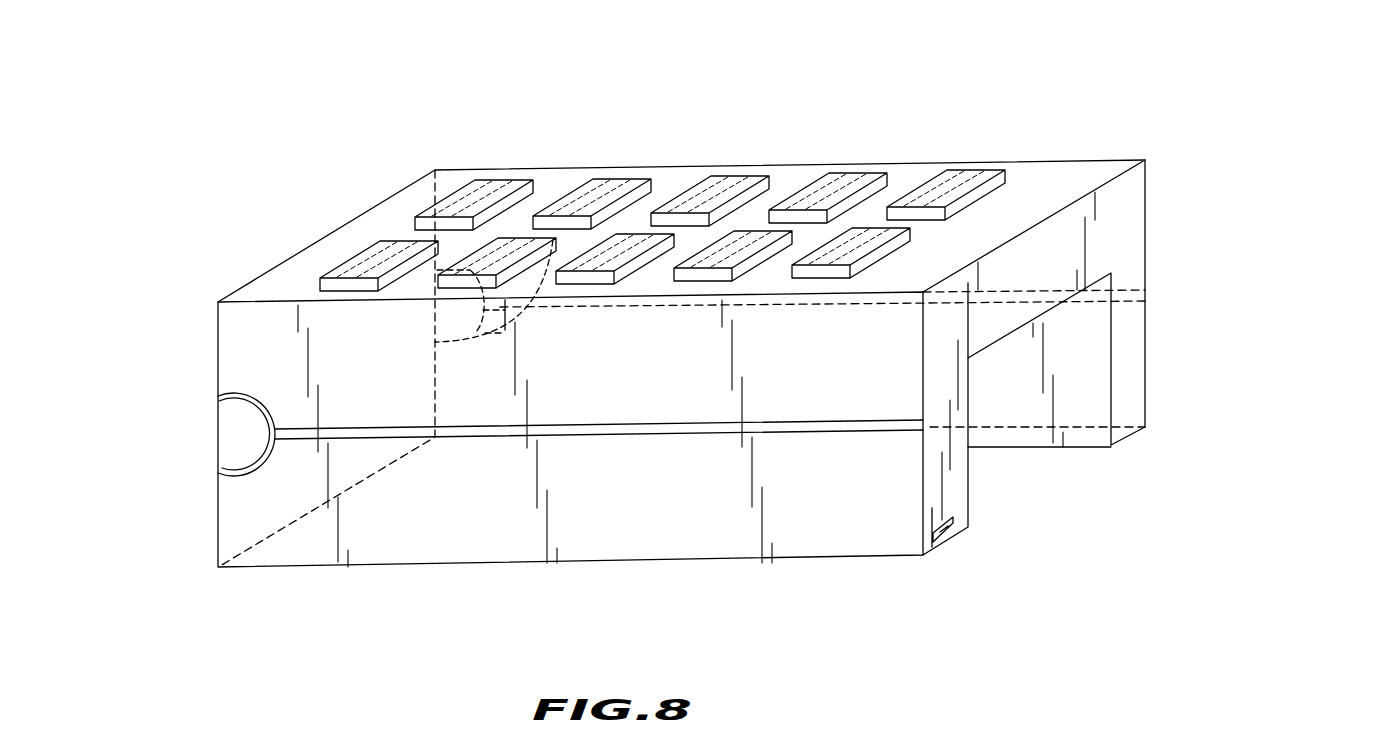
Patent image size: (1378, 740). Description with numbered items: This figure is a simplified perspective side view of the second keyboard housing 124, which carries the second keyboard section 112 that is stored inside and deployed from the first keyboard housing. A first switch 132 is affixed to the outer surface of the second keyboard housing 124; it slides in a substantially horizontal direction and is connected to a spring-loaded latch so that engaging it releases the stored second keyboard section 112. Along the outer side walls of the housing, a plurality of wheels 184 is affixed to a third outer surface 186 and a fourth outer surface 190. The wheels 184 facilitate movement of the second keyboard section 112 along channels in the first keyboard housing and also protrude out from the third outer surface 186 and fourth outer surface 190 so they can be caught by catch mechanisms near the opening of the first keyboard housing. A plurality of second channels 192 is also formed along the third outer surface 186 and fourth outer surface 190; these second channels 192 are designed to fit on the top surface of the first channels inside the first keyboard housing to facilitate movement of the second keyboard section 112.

The second keyboard section 112 is at (1078, 177).
The second keyboard housing 124 is at (1115, 210).
The first switch 132 is at (972, 527).
The plurality of wheels 184 is at (228, 433).
The third outer surface 186 is at (260, 355).
The fourth outer surface 190 is at (755, 215).
The plurality of second channels 192 is at (607, 432).